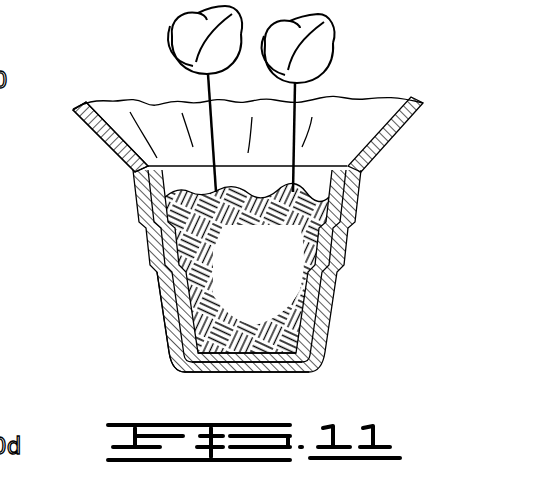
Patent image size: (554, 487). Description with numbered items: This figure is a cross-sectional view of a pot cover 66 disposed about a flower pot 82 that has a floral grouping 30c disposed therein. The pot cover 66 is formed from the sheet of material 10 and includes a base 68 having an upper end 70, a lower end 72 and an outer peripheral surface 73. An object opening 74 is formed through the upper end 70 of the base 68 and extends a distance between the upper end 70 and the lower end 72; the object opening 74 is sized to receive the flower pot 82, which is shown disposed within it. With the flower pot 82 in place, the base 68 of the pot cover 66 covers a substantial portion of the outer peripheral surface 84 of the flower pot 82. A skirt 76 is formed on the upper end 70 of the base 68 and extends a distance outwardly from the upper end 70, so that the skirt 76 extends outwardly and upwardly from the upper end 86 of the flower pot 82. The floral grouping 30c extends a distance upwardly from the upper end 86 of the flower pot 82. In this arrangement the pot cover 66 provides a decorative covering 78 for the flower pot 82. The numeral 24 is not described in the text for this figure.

The sheet of material 10 is at (131, 207).
The lower side wall portion of pot 24 is at (173, 333).
The floral grouping 30c is at (333, 20).
The pot cover 66 is at (370, 182).
The base 68 is at (343, 287).
The upper end 70 is at (157, 162).
The lower end 72 is at (173, 363).
The outer peripheral surface 73 is at (343, 240).
The object opening 74 is at (348, 158).
The skirt 76 is at (405, 123).
The decorative covering 78 is at (90, 151).
The flower pot 82 is at (216, 369).
The outer peripheral surface 84 is at (160, 278).
The upper end 86 is at (317, 158).